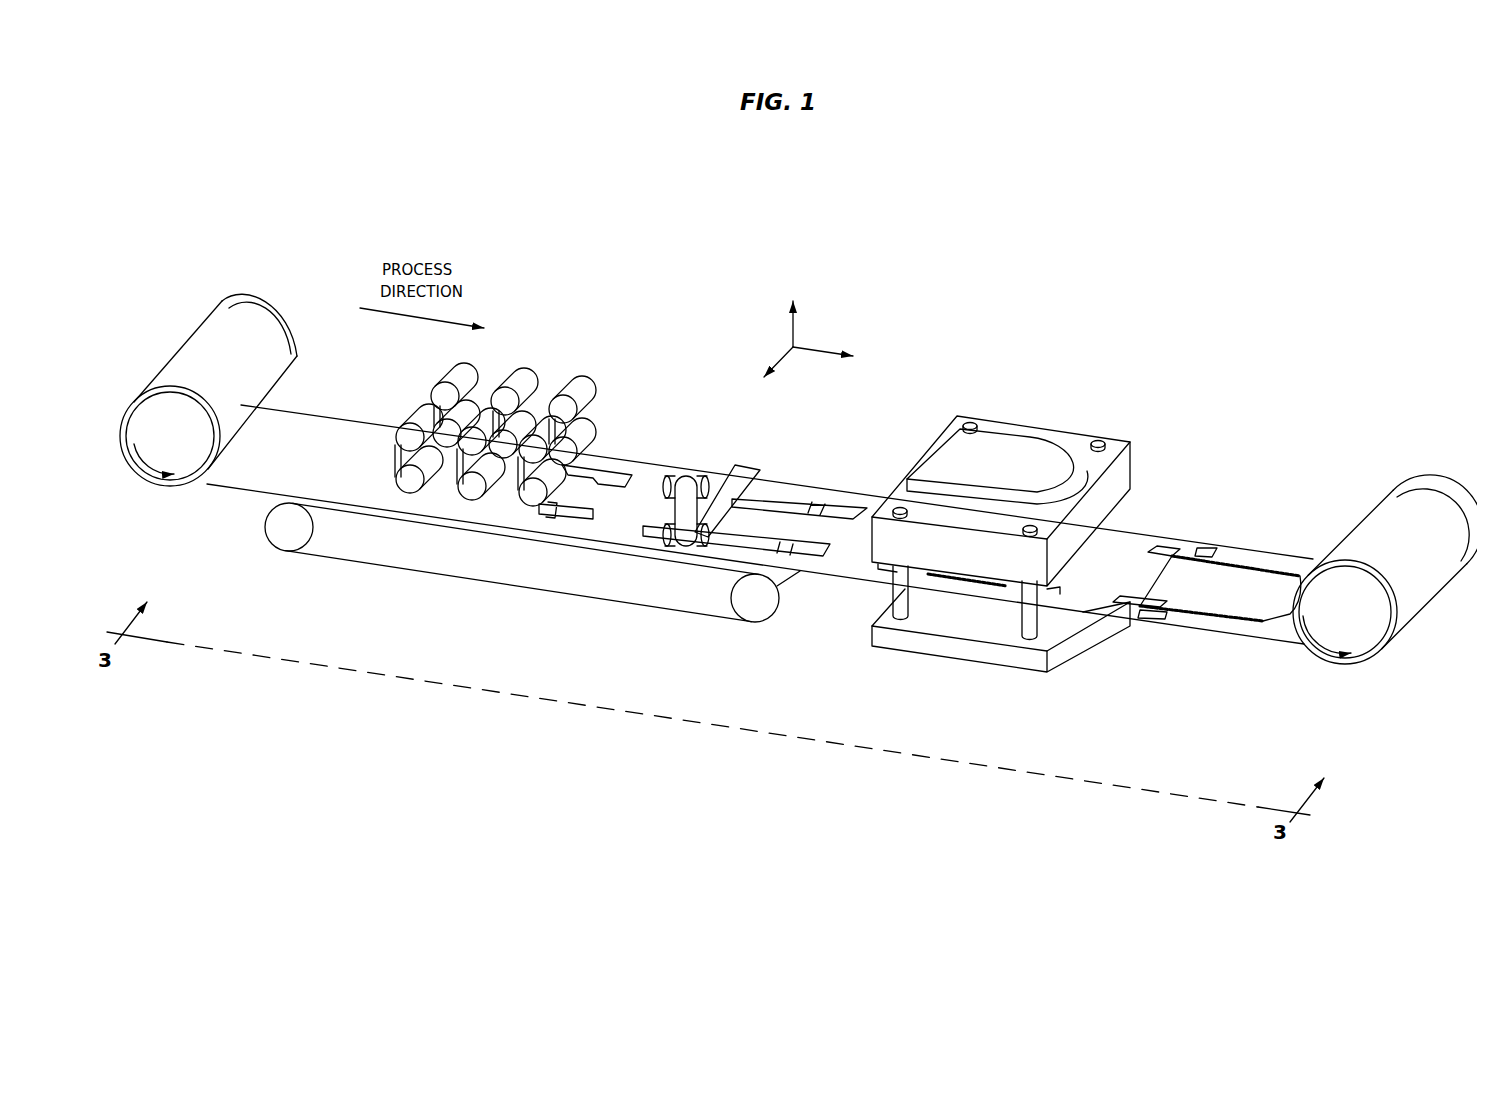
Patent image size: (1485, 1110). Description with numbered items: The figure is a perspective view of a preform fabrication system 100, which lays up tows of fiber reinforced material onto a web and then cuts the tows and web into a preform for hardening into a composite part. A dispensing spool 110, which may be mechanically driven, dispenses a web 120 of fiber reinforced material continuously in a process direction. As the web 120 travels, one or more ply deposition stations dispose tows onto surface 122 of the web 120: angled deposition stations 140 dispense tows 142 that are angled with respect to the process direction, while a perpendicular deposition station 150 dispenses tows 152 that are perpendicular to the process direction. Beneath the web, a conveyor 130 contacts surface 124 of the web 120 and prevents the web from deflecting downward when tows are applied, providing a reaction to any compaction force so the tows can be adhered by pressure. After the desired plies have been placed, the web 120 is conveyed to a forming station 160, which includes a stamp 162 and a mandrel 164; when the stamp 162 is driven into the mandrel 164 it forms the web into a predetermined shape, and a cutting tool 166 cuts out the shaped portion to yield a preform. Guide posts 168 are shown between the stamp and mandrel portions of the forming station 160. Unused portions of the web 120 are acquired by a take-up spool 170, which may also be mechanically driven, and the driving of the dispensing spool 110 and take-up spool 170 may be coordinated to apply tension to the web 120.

The preform fabrication system 100 is at (1299, 311).
The dispensing spool 110 is at (173, 488).
The web 120 is at (760, 504).
The surface 122 is at (288, 446).
The surface 124 is at (246, 498).
The conveyor 130 is at (457, 590).
The angled deposition stations 140 is at (388, 467).
The tows 142 is at (515, 557).
The perpendicular deposition station 150 is at (714, 484).
The tows 152 is at (746, 482).
The forming station 160 is at (1014, 528).
The stamp 162 is at (947, 447).
The mandrel 164 is at (917, 648).
The cutting tool 166 is at (1117, 450).
The guide posts 168 is at (1050, 632).
The take-up spool 170 is at (1330, 667).